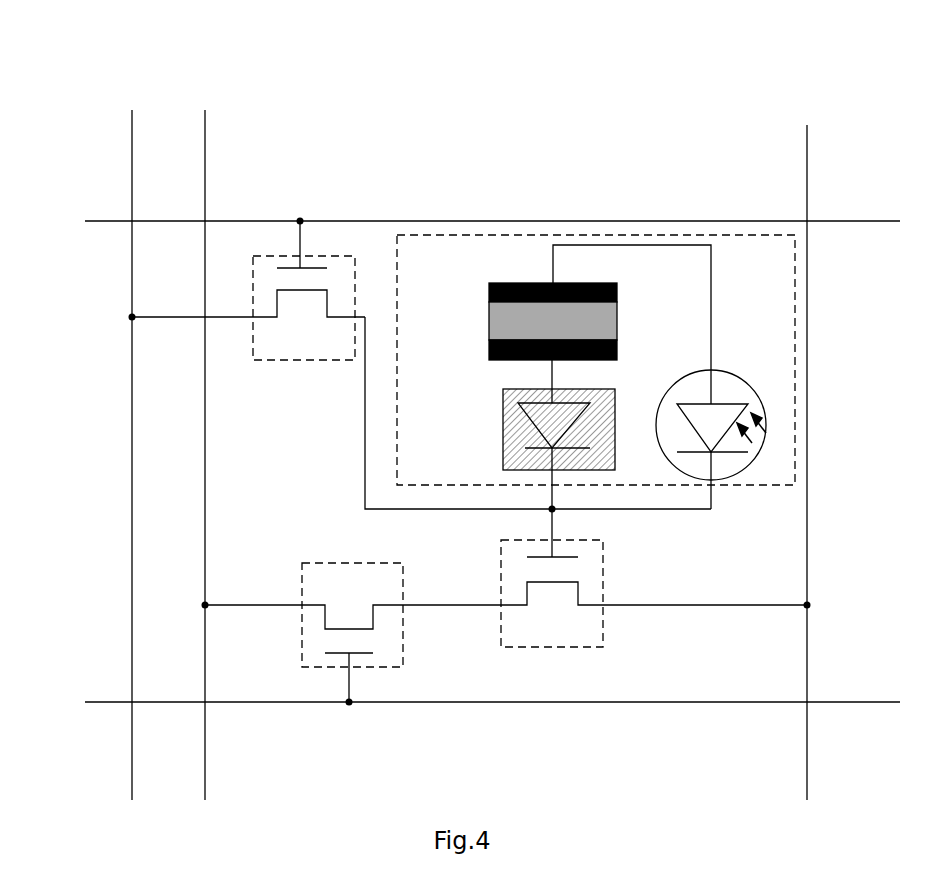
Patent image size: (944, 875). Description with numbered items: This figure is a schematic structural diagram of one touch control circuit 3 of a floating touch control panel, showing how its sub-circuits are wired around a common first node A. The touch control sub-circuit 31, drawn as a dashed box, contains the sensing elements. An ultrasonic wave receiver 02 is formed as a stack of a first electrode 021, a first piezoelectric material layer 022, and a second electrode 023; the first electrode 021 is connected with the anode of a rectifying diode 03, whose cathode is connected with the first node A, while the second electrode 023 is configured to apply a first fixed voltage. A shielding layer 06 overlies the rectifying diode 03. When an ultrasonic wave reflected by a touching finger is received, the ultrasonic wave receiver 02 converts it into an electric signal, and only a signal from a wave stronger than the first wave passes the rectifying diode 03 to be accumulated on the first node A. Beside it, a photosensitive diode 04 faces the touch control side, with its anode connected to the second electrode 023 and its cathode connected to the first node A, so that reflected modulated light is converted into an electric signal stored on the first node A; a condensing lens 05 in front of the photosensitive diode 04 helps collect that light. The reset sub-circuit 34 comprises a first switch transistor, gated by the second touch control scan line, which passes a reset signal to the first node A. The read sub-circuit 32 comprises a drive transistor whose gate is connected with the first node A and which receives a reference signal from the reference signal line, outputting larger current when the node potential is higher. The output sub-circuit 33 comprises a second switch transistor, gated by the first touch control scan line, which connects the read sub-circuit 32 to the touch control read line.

The touch control circuit 3 is at (464, 425).
The touch control sub-circuit 31 is at (596, 336).
The read sub-circuit 32 is at (557, 647).
The output sub-circuit 33 is at (327, 668).
The reset sub-circuit 34 is at (335, 253).
The ultrasonic wave receiver 02 is at (509, 321).
The first electrode 021 is at (526, 350).
The first piezoelectric material layer 022 is at (489, 322).
The second electrode 023 is at (489, 293).
The rectifying diode 03 is at (508, 420).
The photosensitive diode 04 is at (738, 395).
The condensing lens 05 is at (698, 372).
The shielding layer 06 is at (505, 422).